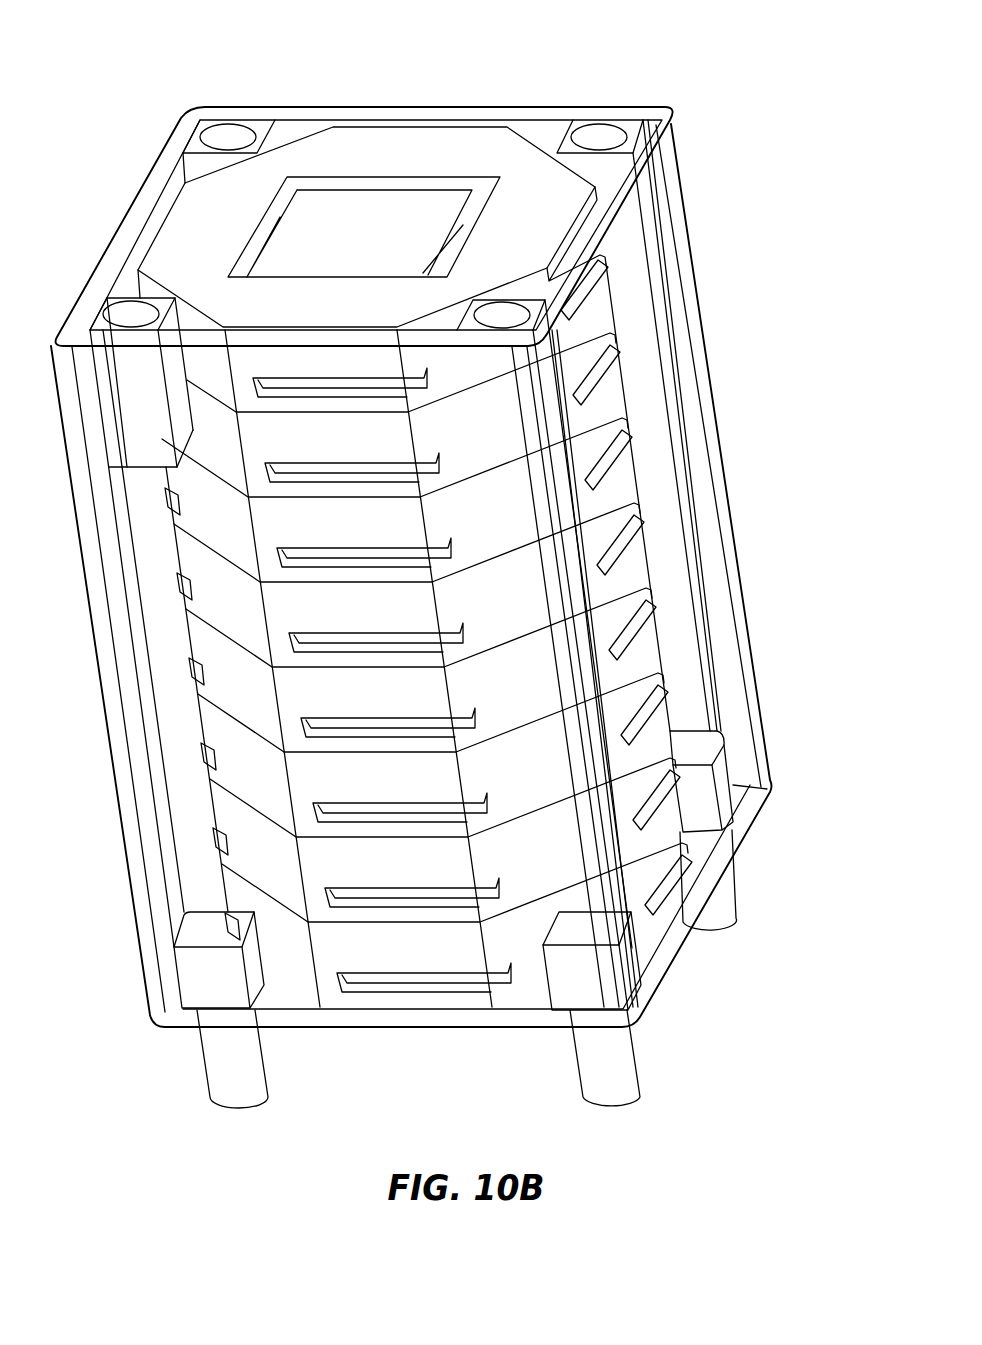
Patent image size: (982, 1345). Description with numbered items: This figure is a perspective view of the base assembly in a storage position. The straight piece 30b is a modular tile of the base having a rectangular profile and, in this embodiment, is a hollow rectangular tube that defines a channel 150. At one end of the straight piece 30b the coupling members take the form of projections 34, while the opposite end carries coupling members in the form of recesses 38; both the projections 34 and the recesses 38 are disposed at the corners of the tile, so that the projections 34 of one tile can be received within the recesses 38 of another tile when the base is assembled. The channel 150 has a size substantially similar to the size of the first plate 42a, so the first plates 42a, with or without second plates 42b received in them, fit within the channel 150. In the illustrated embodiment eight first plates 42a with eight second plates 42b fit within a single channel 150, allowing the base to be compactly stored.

The straight piece 30b is at (655, 482).
The projections 34 is at (237, 1068).
The recesses 38 is at (226, 130).
The first plate 42a is at (347, 147).
The second plate 42b is at (407, 207).
The channel 150 is at (548, 132).